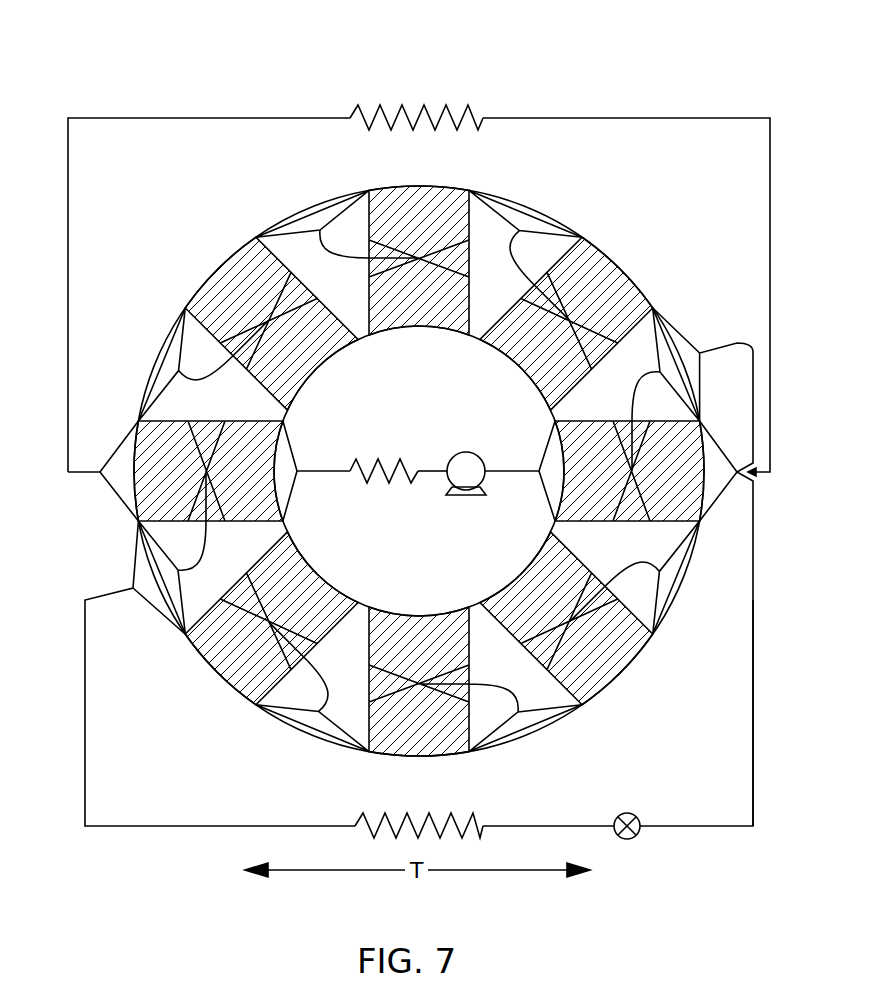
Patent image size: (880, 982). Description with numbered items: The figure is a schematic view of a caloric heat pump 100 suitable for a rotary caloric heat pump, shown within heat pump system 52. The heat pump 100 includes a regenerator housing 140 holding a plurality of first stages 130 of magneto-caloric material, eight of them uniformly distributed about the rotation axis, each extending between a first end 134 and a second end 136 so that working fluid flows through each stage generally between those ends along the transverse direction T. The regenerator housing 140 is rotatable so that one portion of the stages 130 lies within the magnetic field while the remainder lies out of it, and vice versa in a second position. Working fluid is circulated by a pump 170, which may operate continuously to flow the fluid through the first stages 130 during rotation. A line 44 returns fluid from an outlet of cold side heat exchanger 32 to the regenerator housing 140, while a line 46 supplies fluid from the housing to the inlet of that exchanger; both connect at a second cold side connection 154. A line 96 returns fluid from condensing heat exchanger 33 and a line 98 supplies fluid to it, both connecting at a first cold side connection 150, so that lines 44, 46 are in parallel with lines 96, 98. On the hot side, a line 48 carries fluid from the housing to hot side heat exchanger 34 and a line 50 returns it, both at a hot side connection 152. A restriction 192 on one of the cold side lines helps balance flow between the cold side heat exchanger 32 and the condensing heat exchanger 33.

The heat pump system 52 is at (83, 68).
The line 46 is at (222, 118).
The cold side heat exchanger 32 is at (412, 130).
The line 44 is at (770, 237).
The heat pump 100 is at (440, 471).
The regenerator housing 140 is at (257, 236).
The first stage 130 is at (284, 418).
The first cold side connection 150 is at (634, 468).
The second cold side connection 154 is at (112, 470).
The first end 134 is at (132, 532).
The second end 136 is at (276, 530).
The line 48 is at (334, 471).
The pump 170 is at (463, 465).
The hot side heat exchanger 34 is at (378, 478).
The hot side connection 152 is at (290, 495).
The line 50 is at (513, 475).
The line 96 is at (85, 753).
The condensing heat exchanger 33 is at (475, 817).
The restriction 192 is at (627, 812).
The line 98 is at (753, 757).